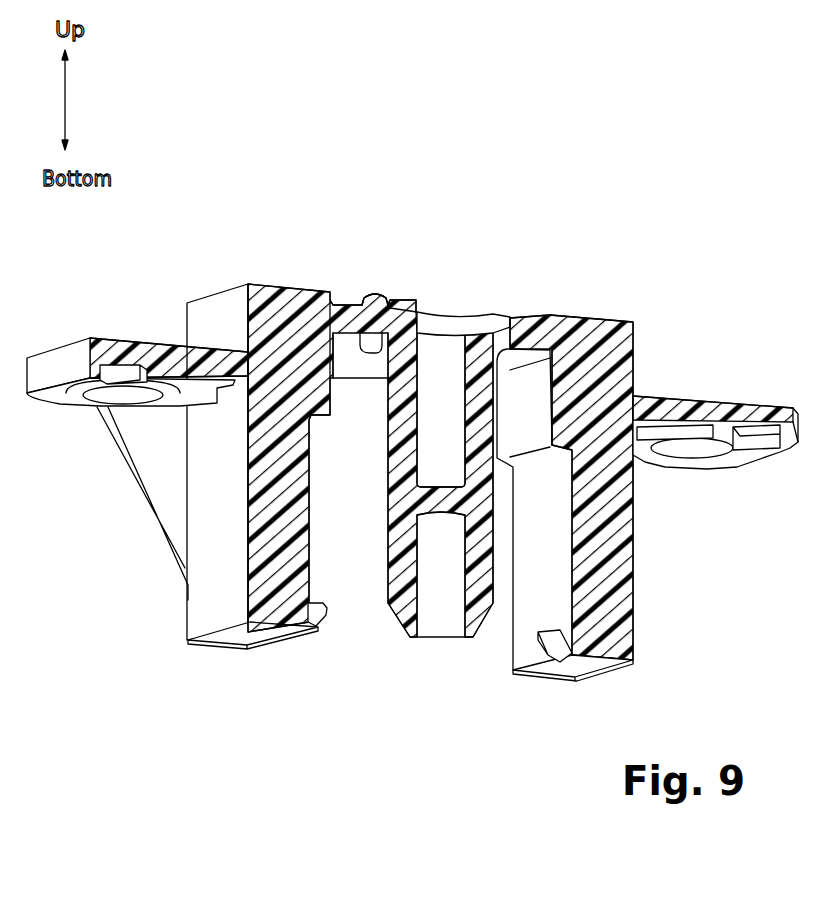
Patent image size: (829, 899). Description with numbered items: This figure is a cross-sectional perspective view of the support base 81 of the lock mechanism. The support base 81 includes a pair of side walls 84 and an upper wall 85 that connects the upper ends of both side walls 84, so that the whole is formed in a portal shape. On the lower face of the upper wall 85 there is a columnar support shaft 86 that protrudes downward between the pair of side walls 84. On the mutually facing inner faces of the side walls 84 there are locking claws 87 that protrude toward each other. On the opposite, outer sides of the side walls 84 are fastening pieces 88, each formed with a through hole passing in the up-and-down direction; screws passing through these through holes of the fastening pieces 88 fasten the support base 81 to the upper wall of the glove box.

The support base 81 is at (417, 480).
The side walls 84 is at (198, 603).
The upper wall 85 is at (350, 310).
The support shaft 86 is at (400, 613).
The locking claws 87 is at (318, 620).
The fastening pieces 88 is at (58, 358).